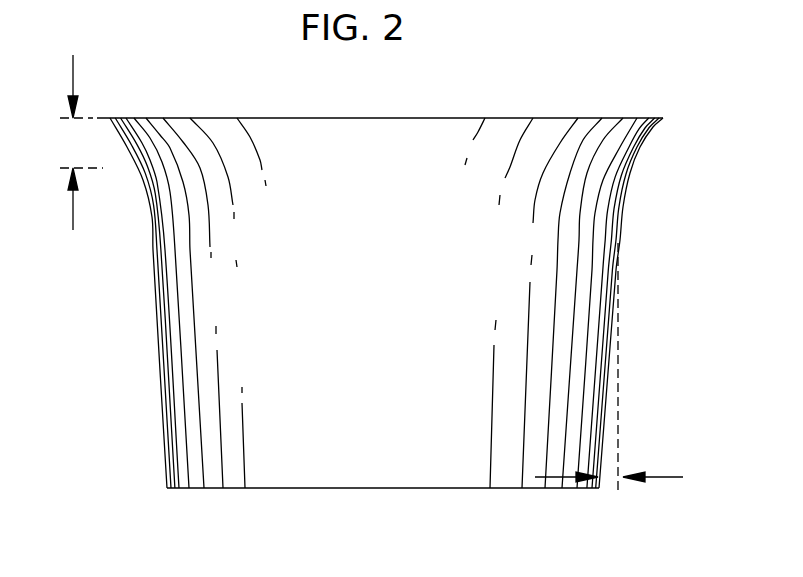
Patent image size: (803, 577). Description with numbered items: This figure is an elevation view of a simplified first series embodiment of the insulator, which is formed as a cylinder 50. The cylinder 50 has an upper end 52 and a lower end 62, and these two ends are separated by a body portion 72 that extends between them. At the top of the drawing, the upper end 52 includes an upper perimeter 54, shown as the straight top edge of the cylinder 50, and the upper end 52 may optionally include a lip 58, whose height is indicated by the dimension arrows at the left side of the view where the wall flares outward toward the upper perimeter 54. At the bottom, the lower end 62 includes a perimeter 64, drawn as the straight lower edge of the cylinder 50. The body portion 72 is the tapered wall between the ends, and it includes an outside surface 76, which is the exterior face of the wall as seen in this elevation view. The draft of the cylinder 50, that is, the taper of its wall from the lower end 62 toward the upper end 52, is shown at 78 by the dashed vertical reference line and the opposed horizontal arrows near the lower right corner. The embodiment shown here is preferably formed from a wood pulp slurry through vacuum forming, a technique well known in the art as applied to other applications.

The cylinder 50 is at (378, 79).
The upper end 52 is at (521, 112).
The upper perimeter 54 is at (301, 118).
The lip 58 is at (81, 142).
The lower end 62 is at (377, 502).
The perimeter 64 is at (497, 488).
The body portion 72 is at (172, 348).
The outside surface 76 is at (610, 215).
The draft 78 is at (609, 483).